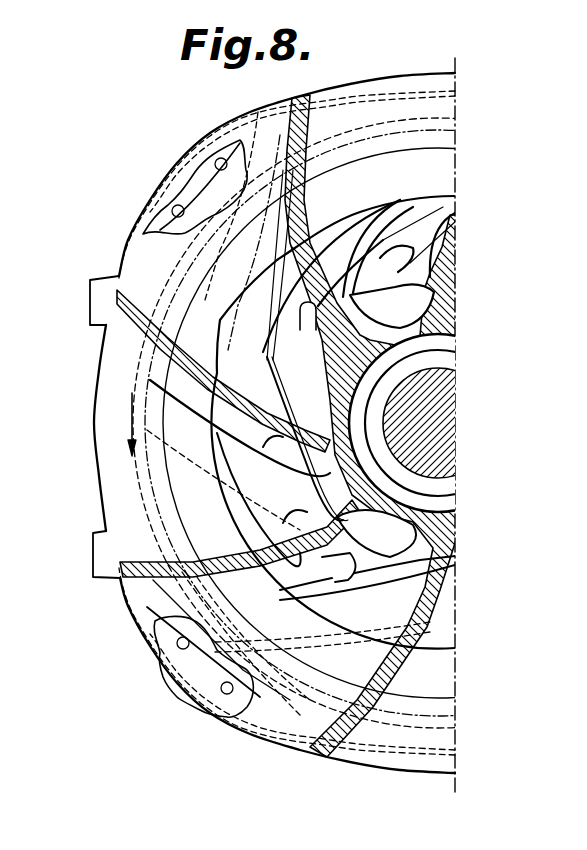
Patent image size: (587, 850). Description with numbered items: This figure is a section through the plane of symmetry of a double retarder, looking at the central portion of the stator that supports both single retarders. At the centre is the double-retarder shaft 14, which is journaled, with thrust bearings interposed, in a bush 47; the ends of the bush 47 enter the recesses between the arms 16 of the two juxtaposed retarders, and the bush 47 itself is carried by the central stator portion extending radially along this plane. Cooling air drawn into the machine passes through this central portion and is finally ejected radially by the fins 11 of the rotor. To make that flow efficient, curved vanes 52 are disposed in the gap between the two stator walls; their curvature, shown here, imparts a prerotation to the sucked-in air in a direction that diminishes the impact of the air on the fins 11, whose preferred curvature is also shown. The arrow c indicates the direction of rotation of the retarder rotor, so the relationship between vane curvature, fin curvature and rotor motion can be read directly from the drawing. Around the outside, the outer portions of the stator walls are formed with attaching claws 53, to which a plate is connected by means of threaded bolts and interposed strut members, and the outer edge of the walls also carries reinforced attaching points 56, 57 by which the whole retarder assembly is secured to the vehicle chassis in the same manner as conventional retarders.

The fins 11 is at (229, 296).
The double-retarder shaft 14 is at (437, 416).
The arms 16 is at (240, 374).
The bush 47 is at (338, 483).
The vanes 52 is at (303, 222).
The attaching claws 53 is at (186, 192).
The reinforced attaching point 56 is at (104, 292).
The reinforced attaching point 57 is at (106, 560).
The arrow c is at (130, 420).